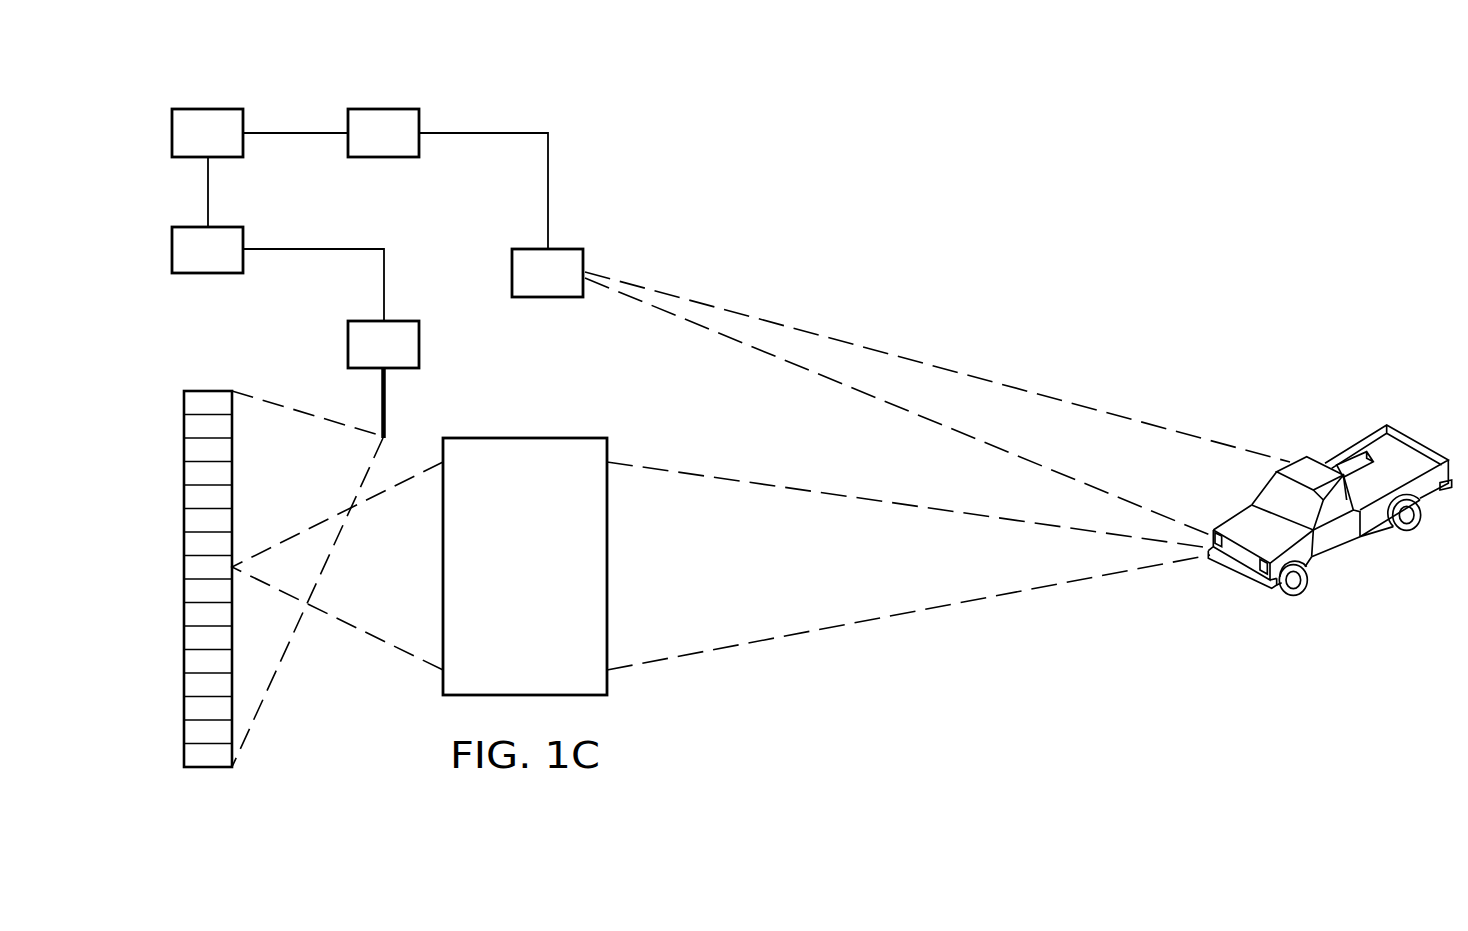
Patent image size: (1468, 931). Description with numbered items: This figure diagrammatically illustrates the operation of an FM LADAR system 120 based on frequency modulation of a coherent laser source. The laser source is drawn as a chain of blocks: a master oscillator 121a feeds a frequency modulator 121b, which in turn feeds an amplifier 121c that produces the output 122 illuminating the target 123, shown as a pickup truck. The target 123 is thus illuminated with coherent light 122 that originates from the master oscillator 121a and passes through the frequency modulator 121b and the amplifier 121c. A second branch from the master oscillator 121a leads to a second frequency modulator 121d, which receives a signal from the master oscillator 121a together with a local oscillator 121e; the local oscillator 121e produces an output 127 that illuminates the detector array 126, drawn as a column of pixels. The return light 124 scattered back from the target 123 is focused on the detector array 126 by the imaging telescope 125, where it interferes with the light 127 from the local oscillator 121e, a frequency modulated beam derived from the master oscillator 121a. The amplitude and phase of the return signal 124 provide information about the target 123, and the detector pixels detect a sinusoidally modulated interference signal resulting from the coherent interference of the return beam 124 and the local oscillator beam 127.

The FM LADAR system 120 is at (1071, 230).
The master oscillator 121a is at (197, 109).
The frequency modulator 121b is at (383, 109).
The amplifier 121c is at (537, 297).
The second frequency modulator 121d is at (172, 240).
The local oscillator 121e is at (348, 345).
The output 122 is at (933, 367).
The target 123 is at (1340, 558).
The return light 124 is at (917, 612).
The imaging telescope 125 is at (502, 618).
The detector array 126 is at (207, 767).
The local oscillator beam 127 is at (321, 418).